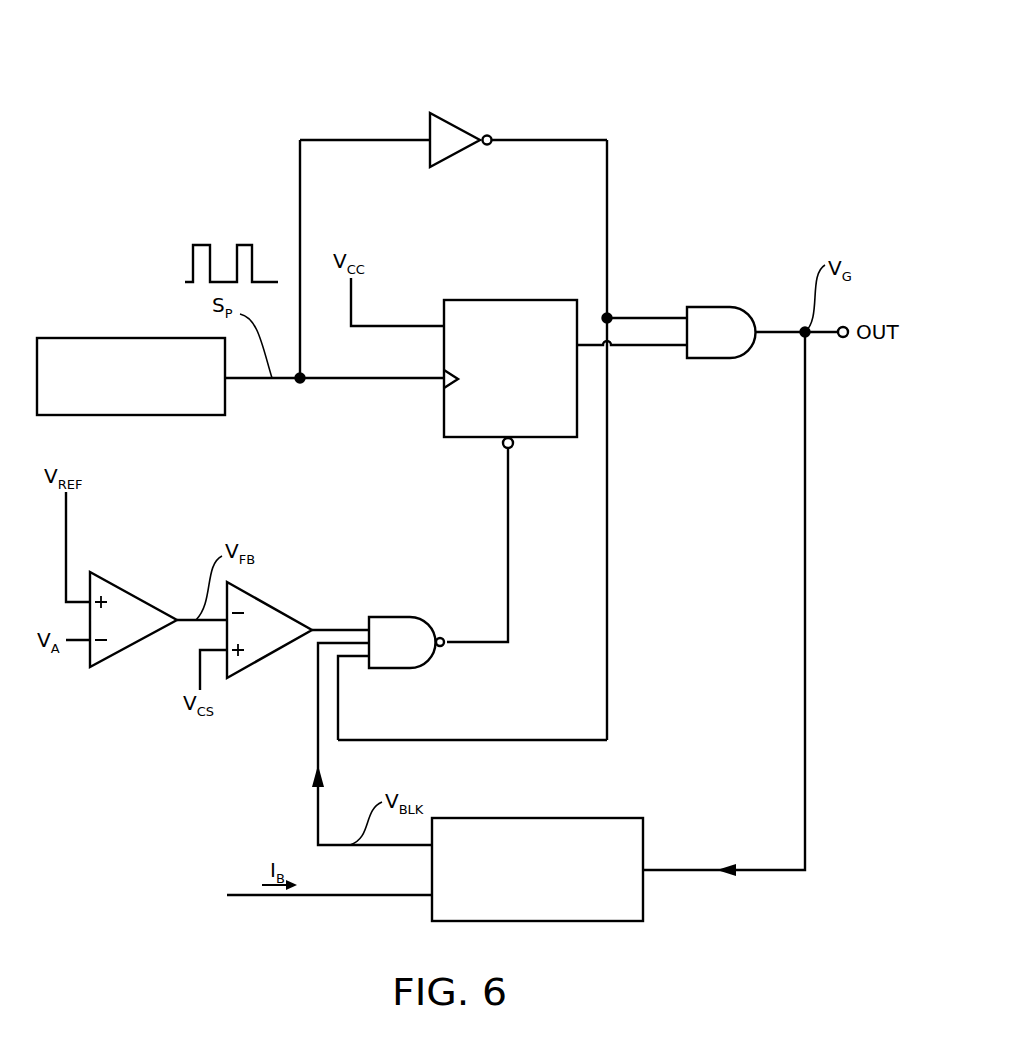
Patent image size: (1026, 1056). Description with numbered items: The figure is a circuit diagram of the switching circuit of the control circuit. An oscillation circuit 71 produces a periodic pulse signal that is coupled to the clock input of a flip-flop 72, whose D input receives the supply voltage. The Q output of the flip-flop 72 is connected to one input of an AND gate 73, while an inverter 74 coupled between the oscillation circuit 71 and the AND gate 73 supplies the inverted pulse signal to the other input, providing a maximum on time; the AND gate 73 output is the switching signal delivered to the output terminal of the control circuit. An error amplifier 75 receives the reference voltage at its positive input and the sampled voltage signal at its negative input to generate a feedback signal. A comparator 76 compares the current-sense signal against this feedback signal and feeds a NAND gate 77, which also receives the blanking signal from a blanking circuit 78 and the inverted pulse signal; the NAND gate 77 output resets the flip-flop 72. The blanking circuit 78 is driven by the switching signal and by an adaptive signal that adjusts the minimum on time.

The oscillation circuit 71 is at (158, 338).
The flip-flop 72 is at (512, 300).
The AND gate 73 is at (714, 307).
The inverter 74 is at (456, 121).
The error amplifier 75 is at (140, 594).
The comparator 76 is at (272, 607).
The NAND gate 77 is at (397, 617).
The blanking circuit 78 is at (625, 818).